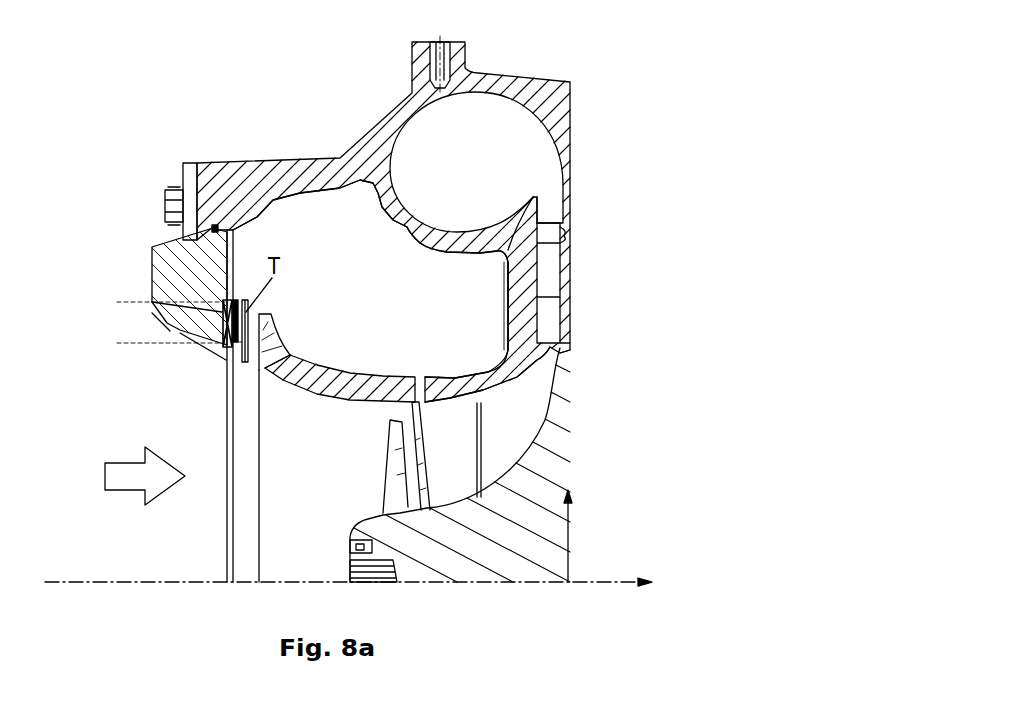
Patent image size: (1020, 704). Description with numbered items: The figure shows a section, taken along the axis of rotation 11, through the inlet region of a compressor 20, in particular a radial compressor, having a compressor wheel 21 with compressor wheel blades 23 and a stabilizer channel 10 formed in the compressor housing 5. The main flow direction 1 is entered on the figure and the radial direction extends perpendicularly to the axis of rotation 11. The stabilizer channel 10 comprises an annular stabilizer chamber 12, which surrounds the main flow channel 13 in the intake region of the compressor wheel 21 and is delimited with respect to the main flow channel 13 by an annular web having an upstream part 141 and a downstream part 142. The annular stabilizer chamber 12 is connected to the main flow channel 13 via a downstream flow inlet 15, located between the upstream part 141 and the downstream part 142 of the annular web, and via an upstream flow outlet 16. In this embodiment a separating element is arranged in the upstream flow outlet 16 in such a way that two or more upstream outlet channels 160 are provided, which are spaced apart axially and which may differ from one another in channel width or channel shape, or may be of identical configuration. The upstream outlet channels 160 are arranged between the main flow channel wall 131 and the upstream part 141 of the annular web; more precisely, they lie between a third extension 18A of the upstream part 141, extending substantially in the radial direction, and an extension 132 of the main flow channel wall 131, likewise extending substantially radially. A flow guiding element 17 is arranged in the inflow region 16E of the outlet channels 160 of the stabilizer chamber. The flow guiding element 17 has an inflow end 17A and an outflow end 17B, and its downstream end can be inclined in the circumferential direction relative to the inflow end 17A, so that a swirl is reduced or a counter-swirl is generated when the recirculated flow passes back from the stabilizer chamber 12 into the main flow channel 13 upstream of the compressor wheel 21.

The main flow direction 1 is at (161, 487).
The compressor housing 5 is at (398, 118).
The stabilizer channel 10 is at (338, 216).
The axis of rotation 11 is at (152, 584).
The stabilizer chamber 12 is at (409, 286).
The main flow channel 13 is at (370, 476).
The flow inlet 15 is at (428, 408).
The flow outlet 16 is at (238, 392).
The inflow region 16E is at (115, 302).
The flow guiding element 17 is at (243, 312).
The inflow end 17A is at (237, 296).
The outflow end 17B is at (257, 352).
The third extension 18A is at (263, 331).
The compressor 20 is at (575, 26).
The compressor wheel 21 is at (507, 567).
The compressor wheel blades 23 is at (416, 502).
The main flow channel wall 131 is at (179, 341).
The extension 132 is at (220, 313).
The upstream part 141 is at (350, 372).
The downstream part 142 is at (473, 372).
The upstream outlet channels 160 is at (252, 370).